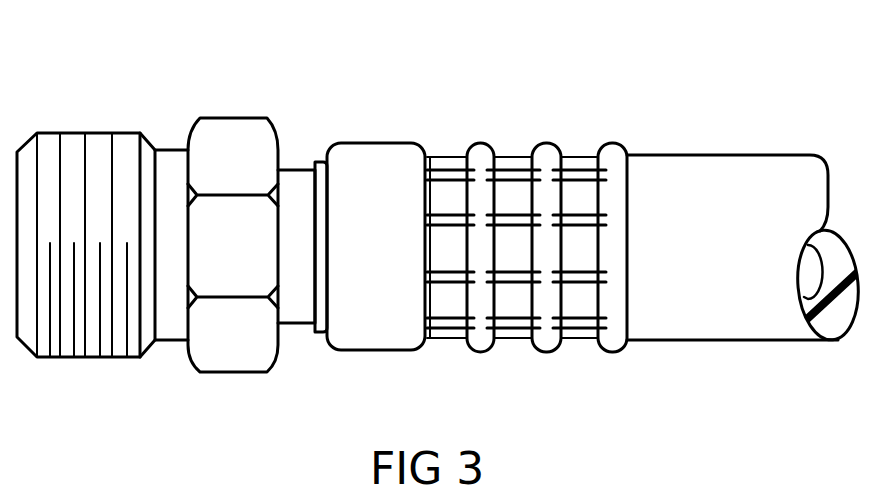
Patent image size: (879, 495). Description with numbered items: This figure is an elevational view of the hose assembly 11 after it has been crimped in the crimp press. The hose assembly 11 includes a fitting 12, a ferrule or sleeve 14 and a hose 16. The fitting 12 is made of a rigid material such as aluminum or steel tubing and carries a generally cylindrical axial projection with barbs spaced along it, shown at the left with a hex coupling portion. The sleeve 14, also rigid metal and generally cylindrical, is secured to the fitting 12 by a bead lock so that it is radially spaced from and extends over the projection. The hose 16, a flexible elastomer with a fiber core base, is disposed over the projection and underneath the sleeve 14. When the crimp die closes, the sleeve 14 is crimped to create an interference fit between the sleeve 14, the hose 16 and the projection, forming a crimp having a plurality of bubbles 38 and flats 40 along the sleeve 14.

The hose assembly 11 is at (170, 96).
The fitting 12 is at (223, 347).
The sleeve 14 is at (343, 152).
The hose 16 is at (755, 170).
The bubbles 38 is at (608, 147).
The flats 40 is at (452, 218).